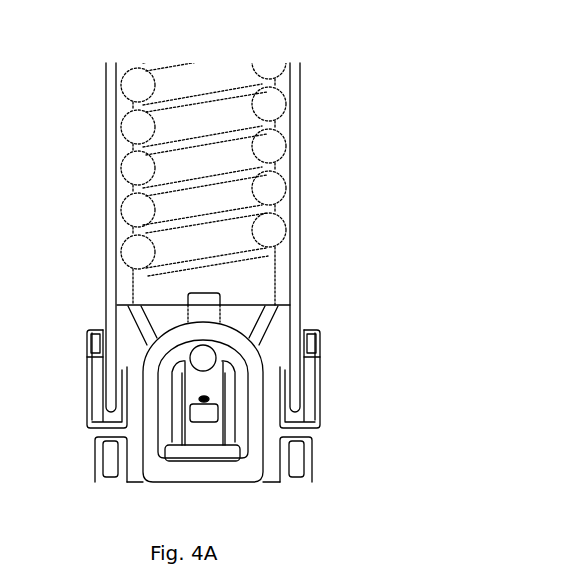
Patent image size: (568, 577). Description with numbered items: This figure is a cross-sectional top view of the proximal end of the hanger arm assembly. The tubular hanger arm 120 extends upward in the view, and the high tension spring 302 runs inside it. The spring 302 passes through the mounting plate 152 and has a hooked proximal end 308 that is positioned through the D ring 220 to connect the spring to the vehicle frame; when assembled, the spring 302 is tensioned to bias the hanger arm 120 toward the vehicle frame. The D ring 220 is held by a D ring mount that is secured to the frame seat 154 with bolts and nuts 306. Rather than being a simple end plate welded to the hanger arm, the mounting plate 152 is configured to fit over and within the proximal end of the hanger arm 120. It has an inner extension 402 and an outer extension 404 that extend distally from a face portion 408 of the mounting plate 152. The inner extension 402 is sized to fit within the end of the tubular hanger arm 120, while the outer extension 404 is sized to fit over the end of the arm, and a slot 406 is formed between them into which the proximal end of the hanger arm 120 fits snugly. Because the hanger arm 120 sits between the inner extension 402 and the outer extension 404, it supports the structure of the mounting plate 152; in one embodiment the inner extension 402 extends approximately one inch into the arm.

The hanger arm 120 is at (301, 228).
The high tension spring 302 is at (287, 147).
The inner extension 402 is at (115, 310).
The outer extension 404 is at (87, 397).
The slot 406 is at (113, 375).
The face portion 408 is at (85, 428).
The D ring 220 is at (268, 466).
The hooked proximal end 308 is at (217, 368).
The nut 306 is at (215, 408).
The mounting plate 152 is at (321, 409).
The frame seat 154 is at (312, 449).